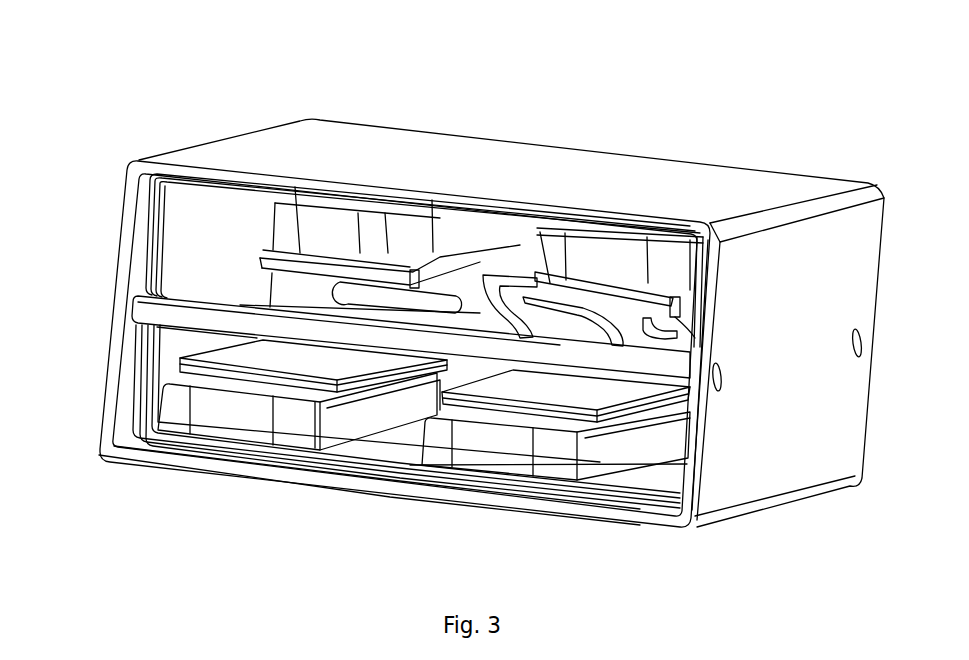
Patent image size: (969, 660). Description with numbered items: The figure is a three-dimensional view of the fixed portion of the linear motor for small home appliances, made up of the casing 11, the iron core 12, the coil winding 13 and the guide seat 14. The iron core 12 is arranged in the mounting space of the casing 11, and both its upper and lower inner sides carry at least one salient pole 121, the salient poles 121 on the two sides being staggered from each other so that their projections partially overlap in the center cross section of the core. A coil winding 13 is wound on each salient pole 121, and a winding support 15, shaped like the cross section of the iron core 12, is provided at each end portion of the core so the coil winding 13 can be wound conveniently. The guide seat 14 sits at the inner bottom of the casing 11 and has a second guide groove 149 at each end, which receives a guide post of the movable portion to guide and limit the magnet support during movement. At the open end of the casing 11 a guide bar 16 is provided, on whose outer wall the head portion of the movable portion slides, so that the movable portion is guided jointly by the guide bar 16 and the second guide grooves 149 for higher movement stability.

The casing 11 is at (737, 188).
The iron core 12 is at (178, 245).
The salient pole 121 is at (697, 413).
The coil winding 13 is at (610, 255).
The guide seat 14 is at (312, 290).
The second guide groove 149 is at (373, 303).
The winding support 15 is at (555, 290).
The guide bar 16 is at (297, 330).